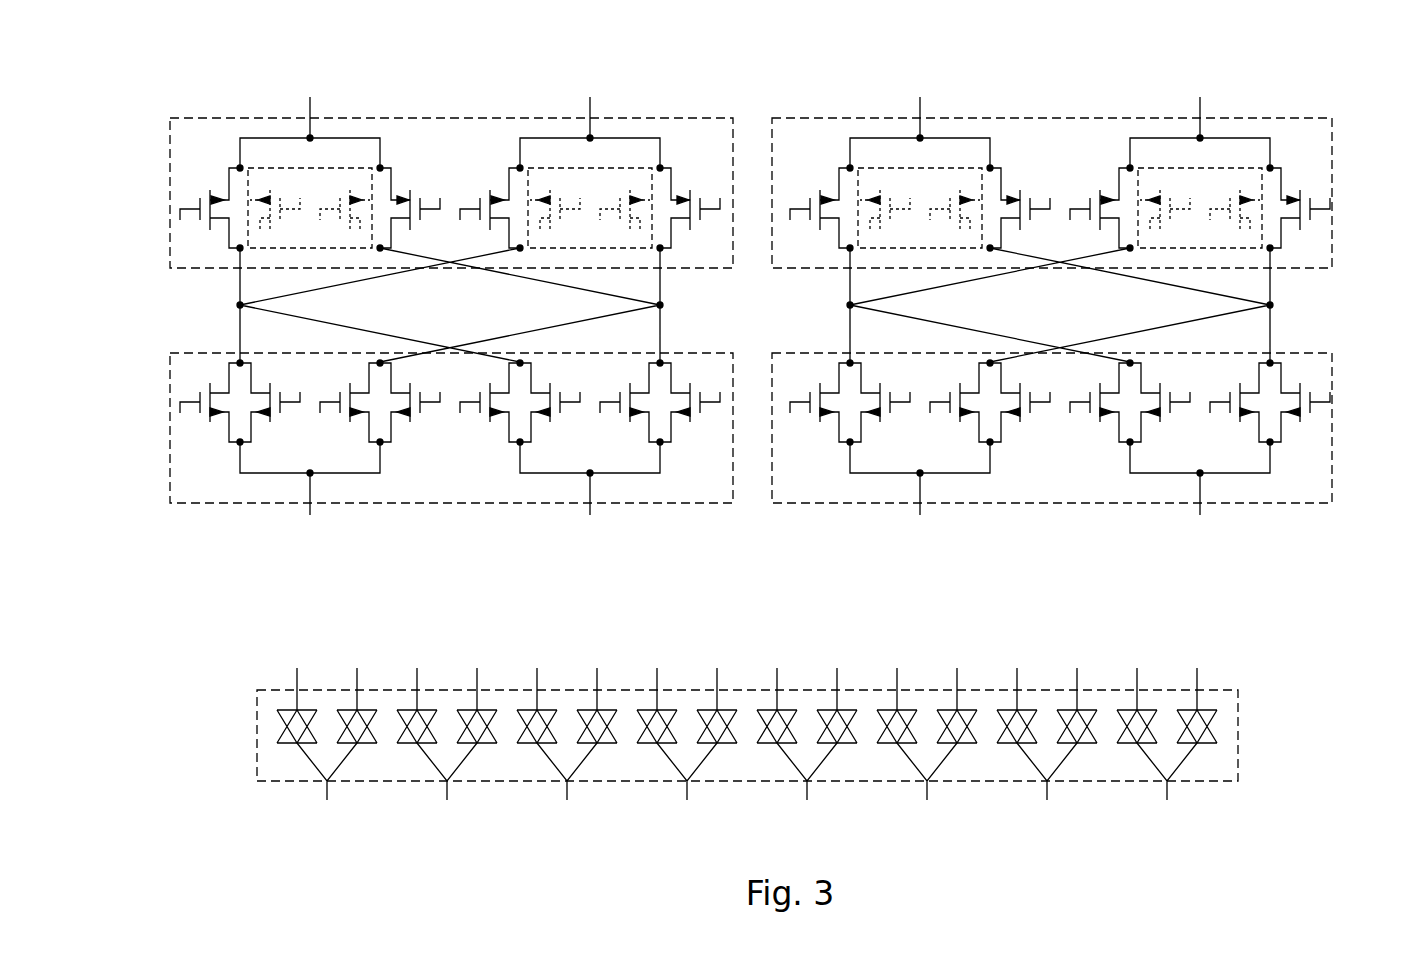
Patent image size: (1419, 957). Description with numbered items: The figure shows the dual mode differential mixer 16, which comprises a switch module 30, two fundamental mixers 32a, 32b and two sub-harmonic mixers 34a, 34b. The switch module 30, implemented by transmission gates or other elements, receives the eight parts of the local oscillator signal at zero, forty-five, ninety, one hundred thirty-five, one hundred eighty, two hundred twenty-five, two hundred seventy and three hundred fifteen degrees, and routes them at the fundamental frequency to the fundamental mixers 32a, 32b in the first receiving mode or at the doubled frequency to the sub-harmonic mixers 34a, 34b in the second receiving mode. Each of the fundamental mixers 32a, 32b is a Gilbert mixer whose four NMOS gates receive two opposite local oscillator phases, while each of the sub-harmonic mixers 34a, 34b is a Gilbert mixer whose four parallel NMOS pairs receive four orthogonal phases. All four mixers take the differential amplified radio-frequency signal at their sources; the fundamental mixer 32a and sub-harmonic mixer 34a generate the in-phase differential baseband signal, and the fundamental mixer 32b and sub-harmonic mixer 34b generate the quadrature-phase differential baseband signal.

The dual mode differential mixer 16 is at (350, 41).
The fundamental mixer 32a is at (168, 140).
The fundamental mixer 32b is at (1334, 140).
The sub-harmonic mixer 34a is at (168, 372).
The sub-harmonic mixer 34b is at (1334, 372).
The switch module 30 is at (257, 730).